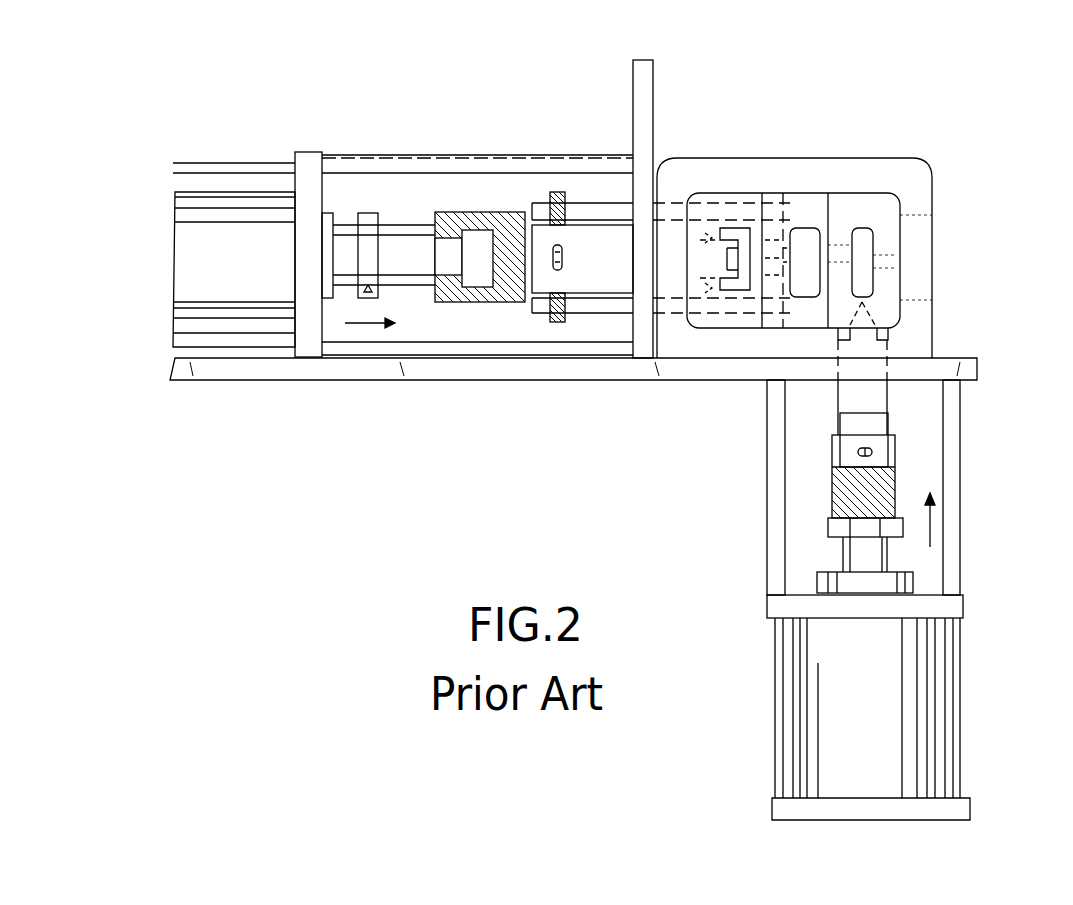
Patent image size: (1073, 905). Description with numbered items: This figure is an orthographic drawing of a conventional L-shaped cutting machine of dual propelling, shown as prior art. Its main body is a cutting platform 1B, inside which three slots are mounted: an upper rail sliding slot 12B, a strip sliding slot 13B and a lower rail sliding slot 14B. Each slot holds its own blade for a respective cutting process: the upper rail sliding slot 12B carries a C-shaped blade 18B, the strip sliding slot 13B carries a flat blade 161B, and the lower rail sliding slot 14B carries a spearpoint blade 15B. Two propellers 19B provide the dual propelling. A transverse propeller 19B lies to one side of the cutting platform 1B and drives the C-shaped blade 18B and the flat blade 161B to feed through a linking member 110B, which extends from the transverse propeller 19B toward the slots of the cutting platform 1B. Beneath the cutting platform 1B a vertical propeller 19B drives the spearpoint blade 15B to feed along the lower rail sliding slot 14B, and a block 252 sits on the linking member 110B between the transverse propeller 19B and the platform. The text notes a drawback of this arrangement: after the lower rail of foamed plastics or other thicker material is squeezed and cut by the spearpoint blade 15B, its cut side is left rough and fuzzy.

The propeller 19B is at (213, 195).
The cutting platform 1B is at (885, 163).
The C-shaped blade 18B is at (700, 237).
The flat blade 161B is at (777, 273).
The lower rail sliding slot 14B is at (870, 248).
The spearpoint blade 15B is at (873, 343).
The upper rail sliding slot 12B is at (727, 293).
The strip sliding slot 13B is at (777, 272).
The linking member 110B is at (597, 313).
The coupling block 252 is at (562, 270).